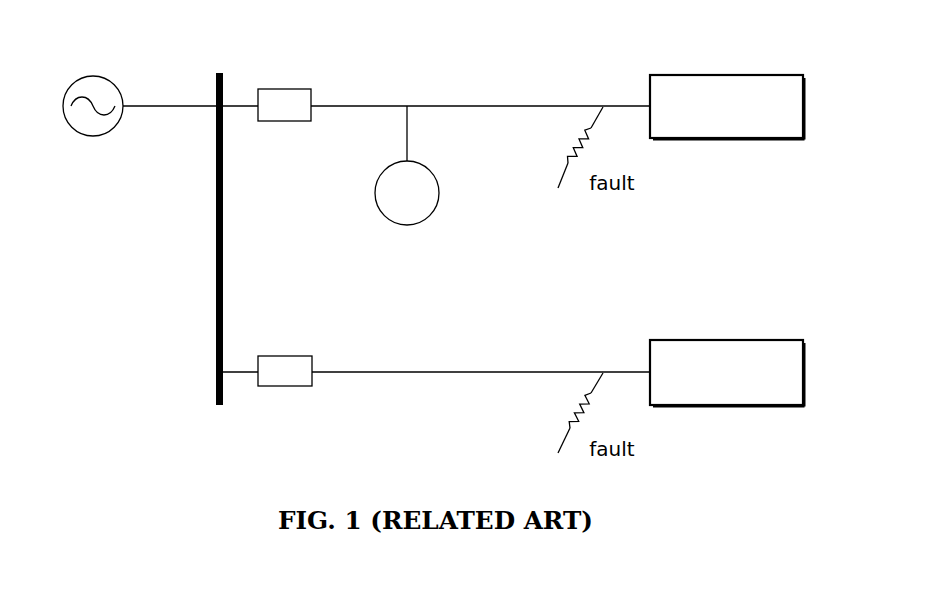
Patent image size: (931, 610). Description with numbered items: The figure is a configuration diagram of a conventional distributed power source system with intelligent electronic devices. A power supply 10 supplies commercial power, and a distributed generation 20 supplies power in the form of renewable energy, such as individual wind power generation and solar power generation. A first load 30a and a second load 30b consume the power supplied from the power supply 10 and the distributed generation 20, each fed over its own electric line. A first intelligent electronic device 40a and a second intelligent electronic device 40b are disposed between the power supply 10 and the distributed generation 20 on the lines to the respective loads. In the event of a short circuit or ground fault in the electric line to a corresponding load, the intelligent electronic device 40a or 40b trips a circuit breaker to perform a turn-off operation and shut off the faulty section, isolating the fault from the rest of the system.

The power supply 10 is at (93, 75).
The distributed generation 20 is at (407, 226).
The first load 30a is at (726, 75).
The second load 30b is at (726, 340).
The first intelligent electronic device 40a is at (283, 122).
The second intelligent electronic device 40b is at (283, 388).